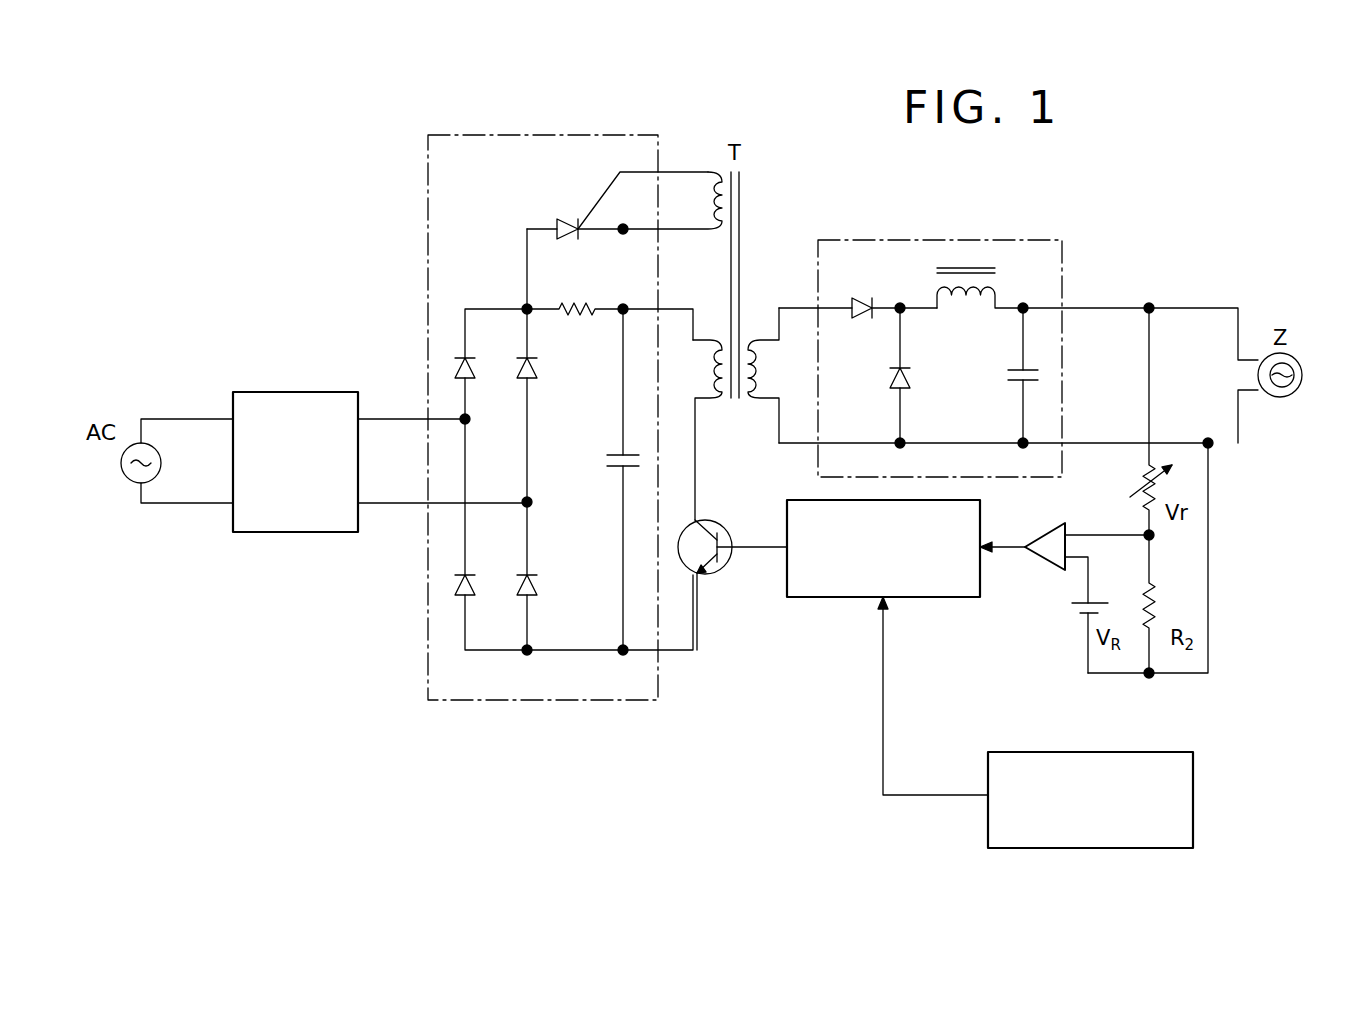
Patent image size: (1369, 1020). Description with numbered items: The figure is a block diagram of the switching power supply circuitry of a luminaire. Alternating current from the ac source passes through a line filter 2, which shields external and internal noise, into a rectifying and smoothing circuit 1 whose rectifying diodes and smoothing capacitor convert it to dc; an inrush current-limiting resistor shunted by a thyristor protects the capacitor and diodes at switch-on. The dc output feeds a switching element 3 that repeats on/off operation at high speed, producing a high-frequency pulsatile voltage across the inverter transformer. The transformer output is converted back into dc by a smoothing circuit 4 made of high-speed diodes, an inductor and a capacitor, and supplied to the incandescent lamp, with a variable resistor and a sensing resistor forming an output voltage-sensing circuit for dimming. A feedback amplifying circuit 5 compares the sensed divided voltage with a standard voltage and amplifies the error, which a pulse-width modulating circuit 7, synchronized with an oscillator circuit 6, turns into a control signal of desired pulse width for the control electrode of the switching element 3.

The rectifier and smoothing circuit 1 is at (458, 135).
The line filter 2 is at (331, 392).
The switching element 3 is at (718, 521).
The smoothing circuit 4 is at (912, 240).
The feedback amplifying circuit 5 is at (1040, 532).
The oscillator circuit 6 is at (1193, 805).
The pulse-width modulating circuit 7 is at (818, 597).